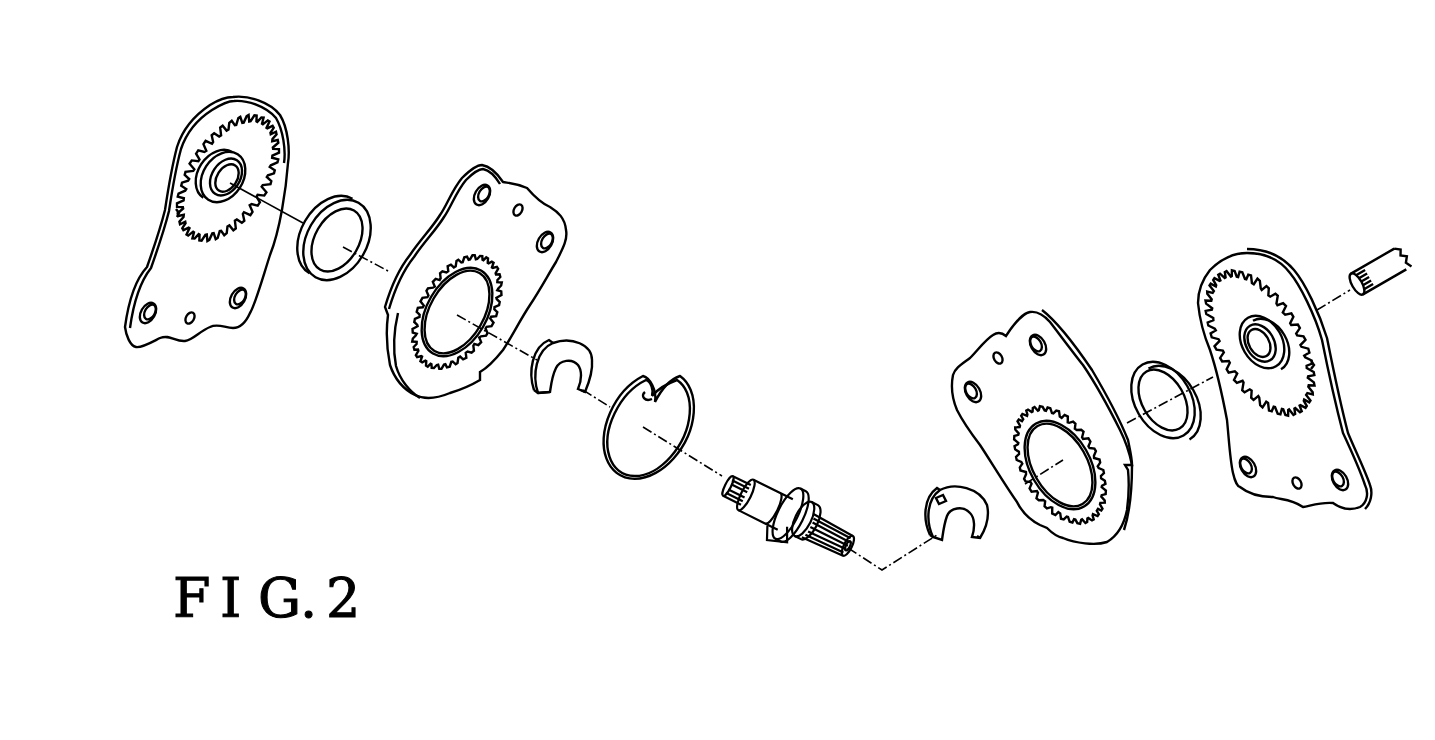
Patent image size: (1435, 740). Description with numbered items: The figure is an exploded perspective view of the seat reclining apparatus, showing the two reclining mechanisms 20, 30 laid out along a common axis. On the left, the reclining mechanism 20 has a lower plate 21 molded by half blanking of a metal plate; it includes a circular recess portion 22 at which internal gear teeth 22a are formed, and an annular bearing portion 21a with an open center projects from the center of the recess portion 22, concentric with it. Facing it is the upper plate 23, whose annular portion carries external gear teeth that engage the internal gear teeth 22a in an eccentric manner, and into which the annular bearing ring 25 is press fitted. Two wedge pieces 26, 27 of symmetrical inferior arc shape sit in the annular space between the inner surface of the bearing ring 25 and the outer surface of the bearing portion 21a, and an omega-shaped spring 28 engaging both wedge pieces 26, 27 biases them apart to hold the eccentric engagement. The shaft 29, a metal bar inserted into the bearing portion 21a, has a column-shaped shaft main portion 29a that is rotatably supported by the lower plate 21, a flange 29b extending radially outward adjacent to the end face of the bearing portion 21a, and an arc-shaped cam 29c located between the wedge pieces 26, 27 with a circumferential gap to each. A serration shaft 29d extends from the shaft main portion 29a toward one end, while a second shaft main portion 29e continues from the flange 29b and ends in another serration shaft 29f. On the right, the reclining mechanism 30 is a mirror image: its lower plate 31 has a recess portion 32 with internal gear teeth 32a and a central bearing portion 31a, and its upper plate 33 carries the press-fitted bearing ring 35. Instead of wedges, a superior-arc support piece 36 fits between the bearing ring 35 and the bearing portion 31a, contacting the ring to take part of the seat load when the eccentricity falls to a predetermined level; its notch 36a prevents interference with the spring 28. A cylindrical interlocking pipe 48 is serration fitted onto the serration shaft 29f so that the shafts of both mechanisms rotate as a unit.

The reclining mechanism 20 is at (431, 122).
The lower plate 21 is at (243, 103).
The bearing portion 21a is at (218, 160).
The recess portion 22 is at (190, 183).
The internal gear teeth 22a is at (178, 213).
The upper plate 23 is at (535, 207).
The bearing ring 25 is at (345, 245).
The wedge piece 26 is at (597, 350).
The wedge piece 27 is at (538, 380).
The spring 28 is at (687, 380).
The shaft 29 is at (828, 530).
The shaft main portion 29a is at (763, 507).
The flange 29b is at (792, 487).
The cam 29c is at (777, 540).
The serration shaft 29d is at (727, 484).
The shaft main portion 29e is at (815, 500).
The serration shaft 29f is at (825, 553).
The reclining mechanism 30 is at (1098, 222).
The lower plate 31 is at (1228, 258).
The bearing portion 31a is at (1270, 318).
The recess portion 32 is at (1230, 318).
The internal gear teeth 32a is at (1313, 365).
The upper plate 33 is at (1012, 337).
The bearing ring 35 is at (1137, 372).
The support piece 36 is at (985, 530).
The notch 36a is at (943, 495).
The interlocking pipe 48 is at (1380, 265).